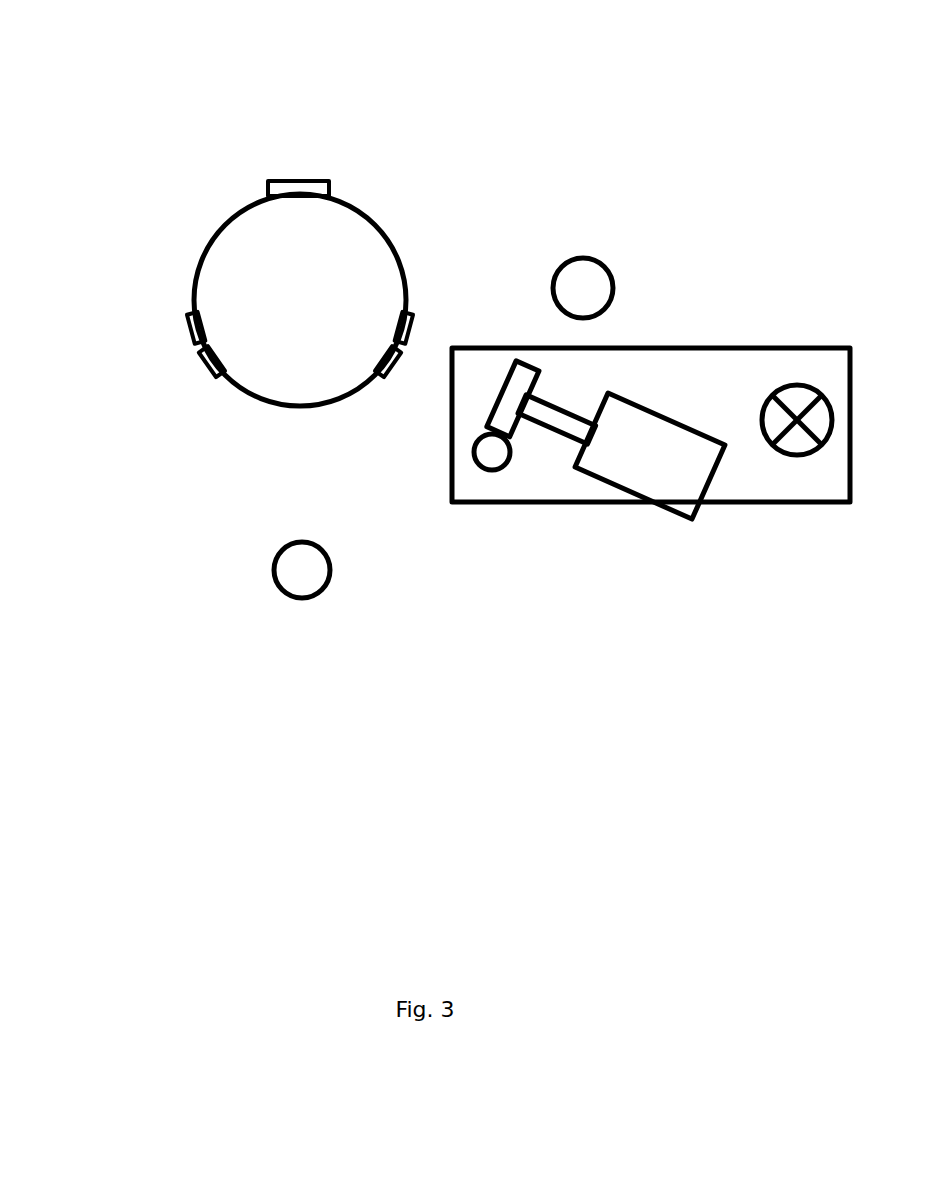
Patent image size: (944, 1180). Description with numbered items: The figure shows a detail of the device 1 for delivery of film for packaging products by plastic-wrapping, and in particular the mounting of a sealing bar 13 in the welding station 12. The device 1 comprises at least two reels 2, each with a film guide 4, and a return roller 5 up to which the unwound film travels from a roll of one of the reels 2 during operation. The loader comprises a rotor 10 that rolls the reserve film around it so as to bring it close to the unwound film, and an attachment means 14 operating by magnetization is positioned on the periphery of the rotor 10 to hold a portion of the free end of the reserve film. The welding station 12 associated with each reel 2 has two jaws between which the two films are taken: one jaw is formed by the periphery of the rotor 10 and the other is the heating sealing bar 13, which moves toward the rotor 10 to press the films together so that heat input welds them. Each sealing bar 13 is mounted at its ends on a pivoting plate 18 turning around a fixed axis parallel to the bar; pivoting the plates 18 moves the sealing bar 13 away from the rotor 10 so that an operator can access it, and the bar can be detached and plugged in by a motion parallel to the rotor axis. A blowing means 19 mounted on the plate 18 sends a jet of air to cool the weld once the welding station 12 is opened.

The device 1 is at (337, 797).
The reel 2 is at (182, 508).
The film guide 4 is at (580, 288).
The return roller 5 is at (297, 572).
The rotor 10 is at (352, 267).
The welding station 12 is at (425, 365).
The sealing bar 13 is at (540, 442).
The attachment means 14 is at (298, 167).
The pivoting plate 18 is at (752, 502).
The blowing means 19 is at (489, 473).